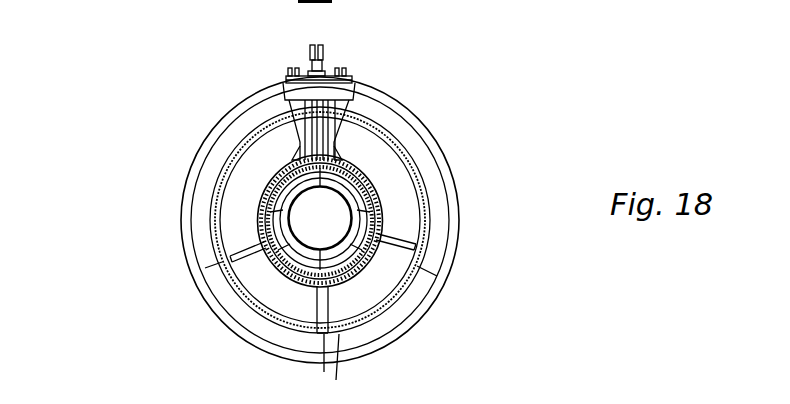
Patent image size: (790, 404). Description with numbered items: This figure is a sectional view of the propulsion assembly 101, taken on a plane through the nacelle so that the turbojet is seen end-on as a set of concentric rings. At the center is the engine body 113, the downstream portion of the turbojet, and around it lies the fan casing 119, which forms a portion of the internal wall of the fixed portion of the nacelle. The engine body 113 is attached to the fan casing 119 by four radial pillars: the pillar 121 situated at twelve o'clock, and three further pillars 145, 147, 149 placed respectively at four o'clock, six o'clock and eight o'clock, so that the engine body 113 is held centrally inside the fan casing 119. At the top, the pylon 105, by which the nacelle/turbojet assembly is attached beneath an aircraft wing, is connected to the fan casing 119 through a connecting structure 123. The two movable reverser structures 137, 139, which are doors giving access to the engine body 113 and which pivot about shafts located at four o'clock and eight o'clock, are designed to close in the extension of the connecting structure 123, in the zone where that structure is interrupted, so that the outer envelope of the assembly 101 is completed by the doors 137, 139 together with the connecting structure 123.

The fan assembly 101 is at (190, 135).
The pylon 105 is at (338, 96).
The engine body 113 is at (240, 288).
The fan casing 119 is at (390, 133).
The pillar 121 is at (300, 107).
The connecting structure 123 is at (425, 172).
The movable reverser structure 137 is at (387, 320).
The movable reverser structure 139 is at (260, 322).
The pillar 145 is at (403, 241).
The pillar 147 is at (336, 380).
The pillar 149 is at (210, 238).